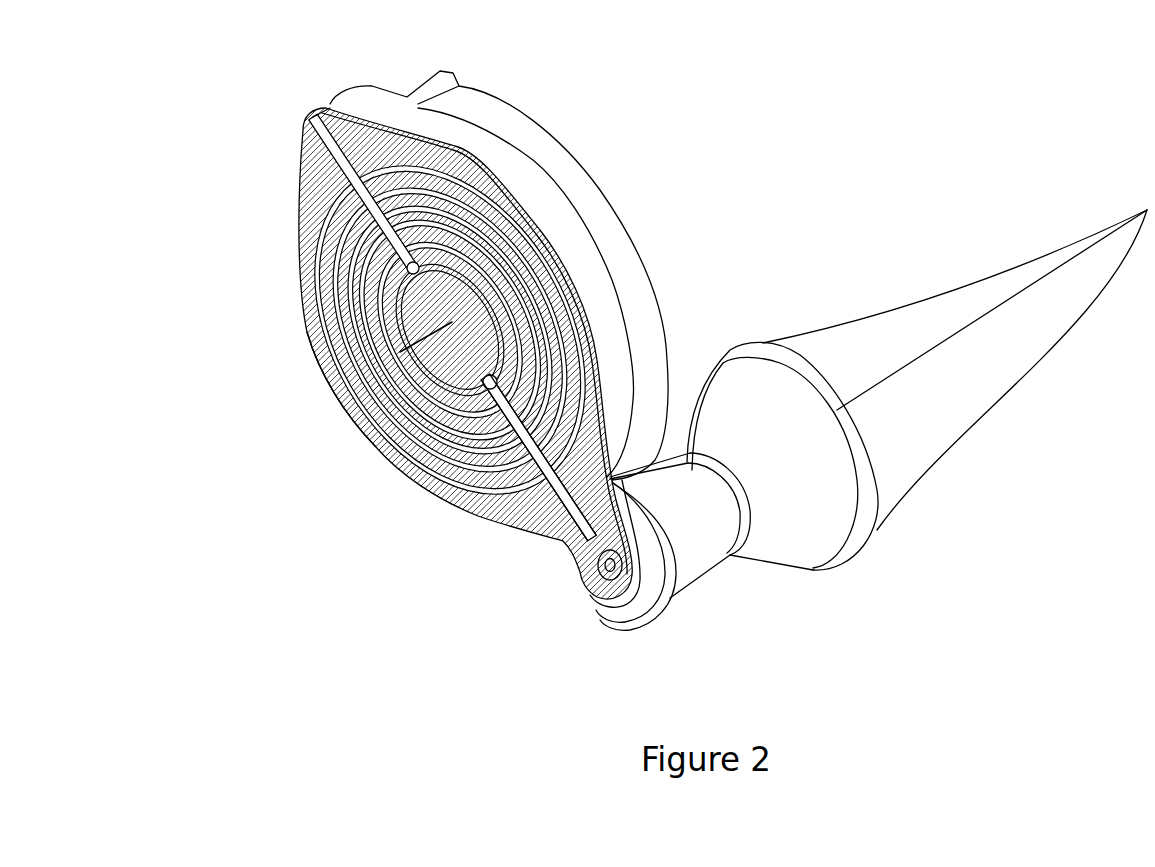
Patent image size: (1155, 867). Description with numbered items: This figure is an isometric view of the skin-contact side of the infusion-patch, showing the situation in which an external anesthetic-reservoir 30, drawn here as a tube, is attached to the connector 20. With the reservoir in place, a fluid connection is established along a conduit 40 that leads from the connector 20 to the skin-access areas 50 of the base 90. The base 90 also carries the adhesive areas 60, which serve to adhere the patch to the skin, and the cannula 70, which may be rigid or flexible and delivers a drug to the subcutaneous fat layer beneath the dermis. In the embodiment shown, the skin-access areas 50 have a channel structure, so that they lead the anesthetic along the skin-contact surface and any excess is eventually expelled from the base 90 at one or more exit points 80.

The connector 20 is at (645, 575).
The external anesthetic-reservoir 30 is at (903, 476).
The conduit 40 is at (612, 566).
The skin-access areas 50 is at (507, 415).
The adhesive areas 60 is at (402, 450).
The cannula 70 is at (398, 358).
The exit points 80 is at (305, 112).
The base 90 is at (302, 244).